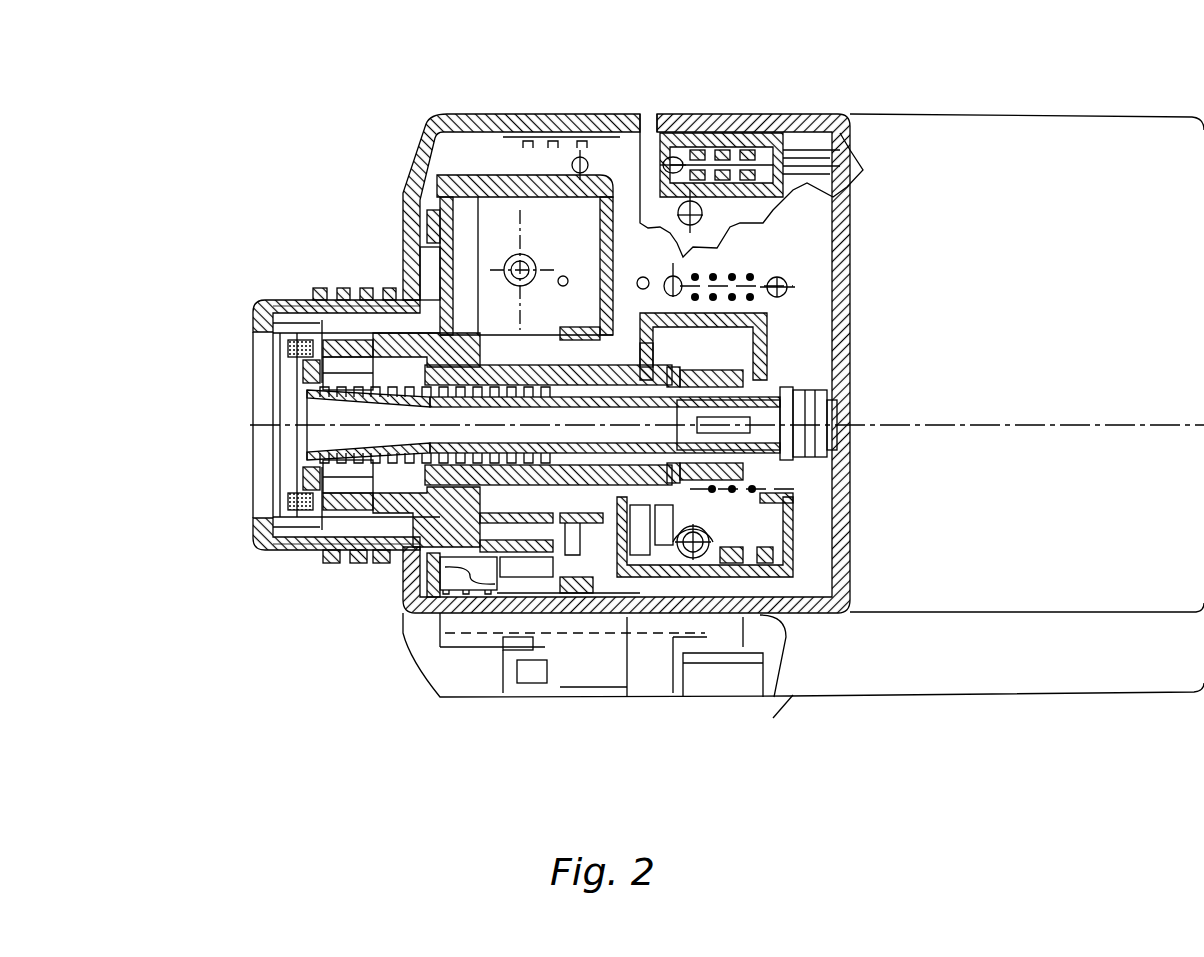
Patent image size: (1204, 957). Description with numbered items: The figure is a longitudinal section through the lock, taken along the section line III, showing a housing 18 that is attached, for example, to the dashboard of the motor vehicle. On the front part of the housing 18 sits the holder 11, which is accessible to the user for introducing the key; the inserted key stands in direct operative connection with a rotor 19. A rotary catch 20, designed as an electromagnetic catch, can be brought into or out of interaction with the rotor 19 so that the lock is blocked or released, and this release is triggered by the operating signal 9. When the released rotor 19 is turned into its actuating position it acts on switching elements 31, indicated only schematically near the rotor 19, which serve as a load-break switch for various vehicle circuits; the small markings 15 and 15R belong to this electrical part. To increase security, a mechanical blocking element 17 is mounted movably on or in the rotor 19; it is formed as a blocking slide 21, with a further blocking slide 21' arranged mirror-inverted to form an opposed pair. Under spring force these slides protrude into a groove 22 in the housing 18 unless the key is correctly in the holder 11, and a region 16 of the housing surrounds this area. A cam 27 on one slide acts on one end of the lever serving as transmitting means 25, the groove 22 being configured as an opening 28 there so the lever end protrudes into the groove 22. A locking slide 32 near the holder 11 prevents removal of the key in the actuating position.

The operating signal 9 is at (982, 79).
The holder 11 is at (277, 453).
The marking 15 is at (569, 290).
The marking 15R is at (641, 293).
The gear housing 16 is at (400, 257).
The blocking element 17 is at (293, 300).
The housing 18 is at (417, 165).
The rotor 19 is at (397, 594).
The rotary catch 20 is at (531, 225).
The blocking slide 21 is at (301, 621).
The further blocking slide 21' is at (390, 632).
The groove 22 is at (340, 297).
The transmitting means 25 is at (367, 297).
The cam 27 is at (298, 358).
The opening 28 is at (318, 294).
The switching elements 31 is at (642, 548).
The locking slide 32 is at (292, 522).
The section line III is at (230, 429).